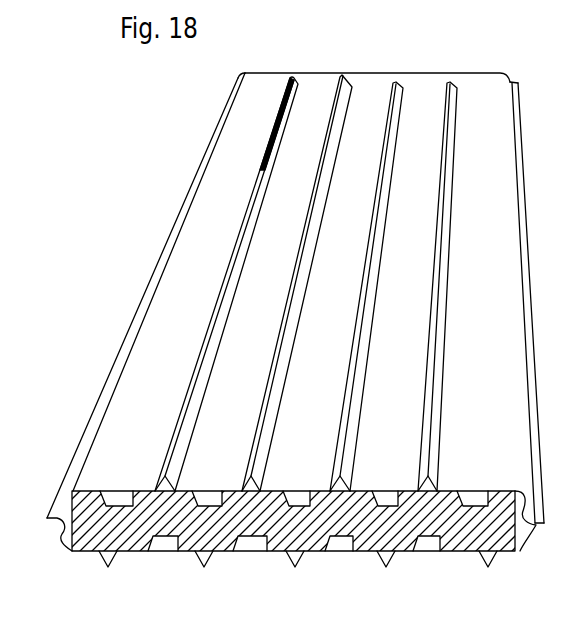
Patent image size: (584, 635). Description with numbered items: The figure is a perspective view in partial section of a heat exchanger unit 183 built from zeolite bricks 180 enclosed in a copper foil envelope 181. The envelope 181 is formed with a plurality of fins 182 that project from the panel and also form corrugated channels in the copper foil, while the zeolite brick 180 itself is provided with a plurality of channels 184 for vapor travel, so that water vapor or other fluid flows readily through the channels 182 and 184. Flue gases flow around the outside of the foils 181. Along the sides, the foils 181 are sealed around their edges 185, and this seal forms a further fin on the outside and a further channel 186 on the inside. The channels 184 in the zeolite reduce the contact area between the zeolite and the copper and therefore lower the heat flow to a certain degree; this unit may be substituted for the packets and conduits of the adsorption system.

The zeolite bricks 180 is at (296, 551).
The copper foil envelope 181 is at (158, 315).
The fins 182 is at (278, 335).
The heat exchanger unit 183 is at (222, 107).
The channels 184 is at (335, 555).
The edges 185 is at (70, 472).
The further channel 186 is at (68, 528).